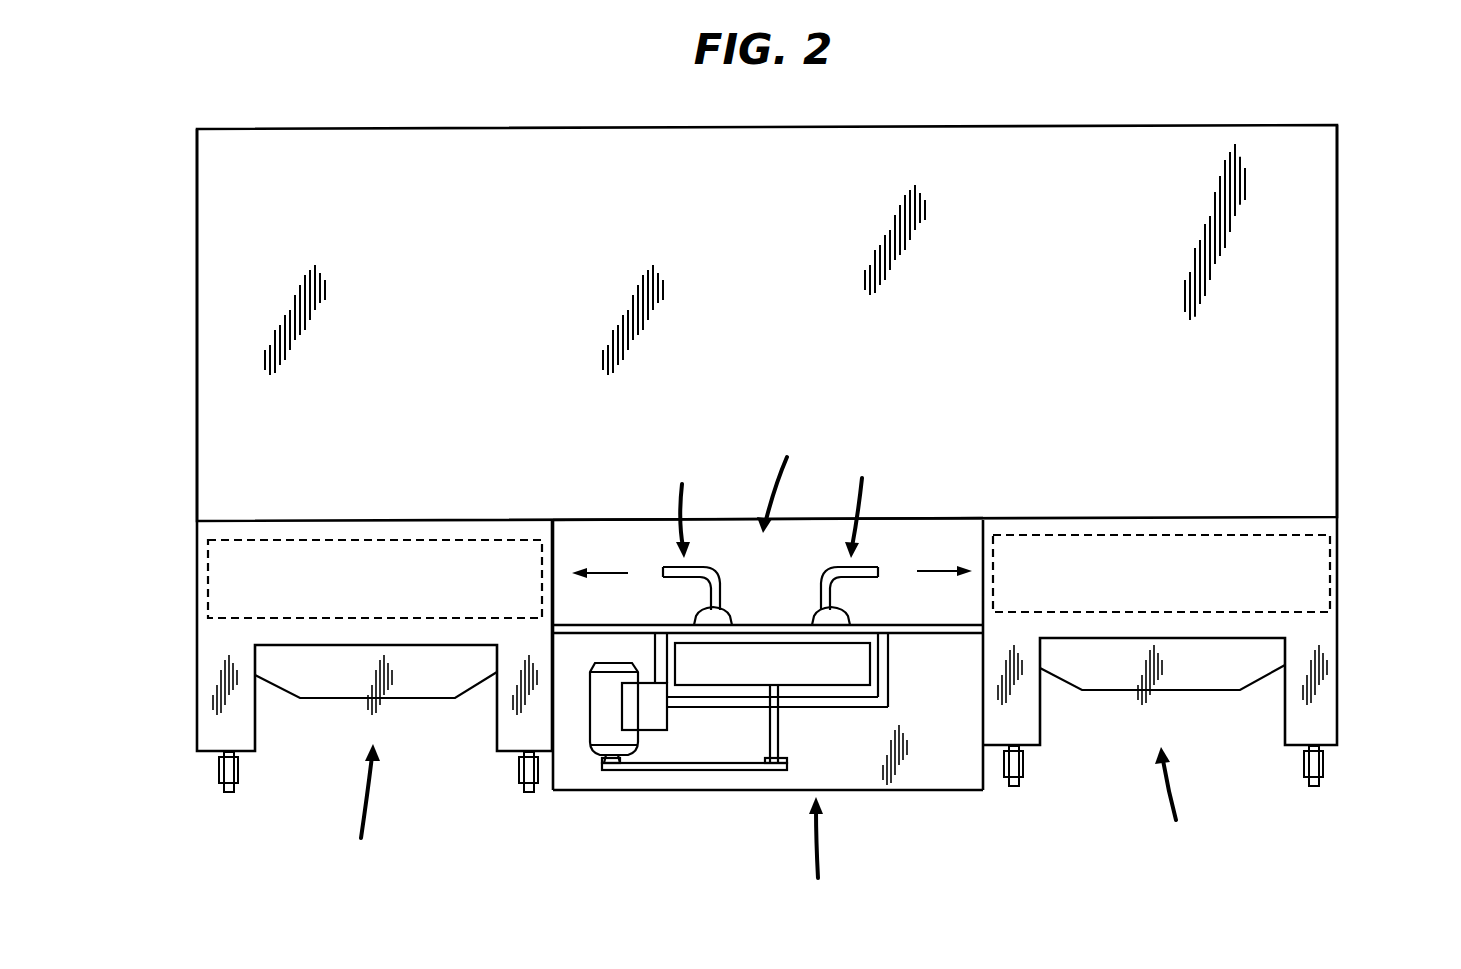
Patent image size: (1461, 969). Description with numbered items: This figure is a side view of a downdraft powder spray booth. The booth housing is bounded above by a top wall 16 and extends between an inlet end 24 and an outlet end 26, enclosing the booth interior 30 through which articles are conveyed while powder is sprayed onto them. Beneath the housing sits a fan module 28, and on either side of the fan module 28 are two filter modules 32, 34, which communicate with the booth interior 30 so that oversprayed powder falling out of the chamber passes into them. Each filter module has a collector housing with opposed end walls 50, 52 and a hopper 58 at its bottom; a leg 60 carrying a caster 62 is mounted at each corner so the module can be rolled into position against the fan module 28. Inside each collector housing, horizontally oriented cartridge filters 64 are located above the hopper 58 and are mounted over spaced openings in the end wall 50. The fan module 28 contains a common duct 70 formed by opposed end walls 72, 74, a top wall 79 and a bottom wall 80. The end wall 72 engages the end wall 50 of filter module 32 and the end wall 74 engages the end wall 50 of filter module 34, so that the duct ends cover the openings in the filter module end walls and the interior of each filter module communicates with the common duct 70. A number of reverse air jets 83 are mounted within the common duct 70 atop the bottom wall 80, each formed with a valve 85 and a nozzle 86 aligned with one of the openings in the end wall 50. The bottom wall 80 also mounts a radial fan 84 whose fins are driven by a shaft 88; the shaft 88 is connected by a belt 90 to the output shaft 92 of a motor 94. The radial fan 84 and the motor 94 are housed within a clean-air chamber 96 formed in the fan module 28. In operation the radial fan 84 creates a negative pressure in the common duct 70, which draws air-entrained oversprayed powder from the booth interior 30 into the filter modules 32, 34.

The top wall 16 is at (1028, 128).
The inlet end 24 is at (1337, 345).
The outlet end 26 is at (197, 255).
The fan module 28 is at (829, 853).
The booth interior 30 is at (775, 258).
The filter module 32 is at (374, 699).
The filter module 34 is at (1160, 689).
The end wall 50 is at (548, 545).
The end wall 52 is at (197, 577).
The hopper 58 is at (328, 685).
The leg 60 is at (197, 697).
The caster 62 is at (228, 792).
The cartridge filter 64 is at (375, 540).
The common duct 70 is at (789, 481).
The end wall 72 is at (553, 535).
The end wall 74 is at (983, 545).
The top wall 79 is at (731, 518).
The bottom wall 80 is at (638, 625).
The reverse air jets 83 is at (772, 513).
The radial fan 84 is at (862, 663).
The valve 85 is at (810, 610).
The nozzle 86 is at (670, 568).
The shaft 88 is at (780, 728).
The belt 90 is at (698, 770).
The output shaft 92 is at (628, 768).
The motor 94 is at (592, 725).
The clean-air chamber 96 is at (932, 763).